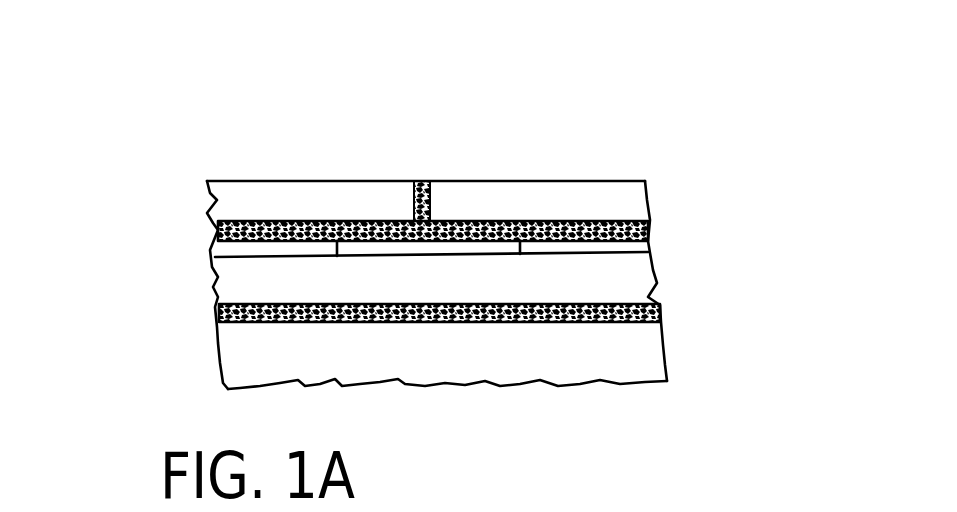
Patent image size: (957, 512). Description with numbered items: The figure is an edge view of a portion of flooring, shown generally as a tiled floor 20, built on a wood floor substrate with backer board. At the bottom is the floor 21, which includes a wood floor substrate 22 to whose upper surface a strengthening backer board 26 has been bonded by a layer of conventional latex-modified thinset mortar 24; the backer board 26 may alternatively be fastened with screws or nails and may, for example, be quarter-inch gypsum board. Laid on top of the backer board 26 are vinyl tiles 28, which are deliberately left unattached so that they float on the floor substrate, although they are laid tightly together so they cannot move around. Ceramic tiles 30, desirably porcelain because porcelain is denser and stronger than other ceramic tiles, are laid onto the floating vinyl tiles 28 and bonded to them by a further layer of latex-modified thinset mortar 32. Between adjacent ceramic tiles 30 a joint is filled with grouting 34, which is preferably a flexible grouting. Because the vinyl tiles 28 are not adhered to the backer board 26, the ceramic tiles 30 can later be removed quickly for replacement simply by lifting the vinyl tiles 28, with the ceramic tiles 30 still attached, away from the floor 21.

The tiled floor 20 is at (663, 150).
The floor 21 is at (653, 257).
The wood floor substrate 22 is at (494, 371).
The latex-modified thinset mortar 24 is at (218, 311).
The strengthening backer board 26 is at (492, 298).
The vinyl tiles 28 is at (210, 251).
The ceramic tiles 30 is at (345, 217).
The latex-modified thinset mortar 32 is at (218, 237).
The grouting 34 is at (421, 183).